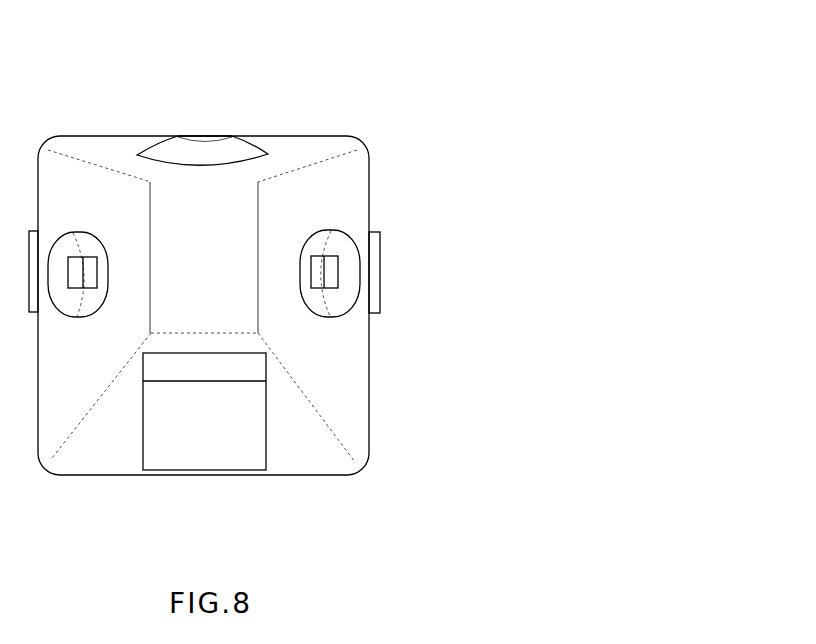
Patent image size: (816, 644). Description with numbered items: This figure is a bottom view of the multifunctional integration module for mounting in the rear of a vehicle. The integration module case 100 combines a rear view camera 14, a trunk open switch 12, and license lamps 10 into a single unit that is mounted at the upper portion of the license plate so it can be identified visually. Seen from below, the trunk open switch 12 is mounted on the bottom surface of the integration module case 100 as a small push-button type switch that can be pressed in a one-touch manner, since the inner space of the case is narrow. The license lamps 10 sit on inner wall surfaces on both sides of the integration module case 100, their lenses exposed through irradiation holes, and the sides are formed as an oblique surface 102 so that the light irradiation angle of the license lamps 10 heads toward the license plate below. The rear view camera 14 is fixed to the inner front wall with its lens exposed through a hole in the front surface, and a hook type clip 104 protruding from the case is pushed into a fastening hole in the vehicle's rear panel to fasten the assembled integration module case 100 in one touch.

The integration module case 100 is at (259, 286).
The oblique surface 102 is at (352, 383).
The hook type clip 104 is at (377, 275).
The license lamps 10 is at (332, 262).
The rear view camera 14 is at (200, 137).
The trunk open switch 12 is at (205, 450).